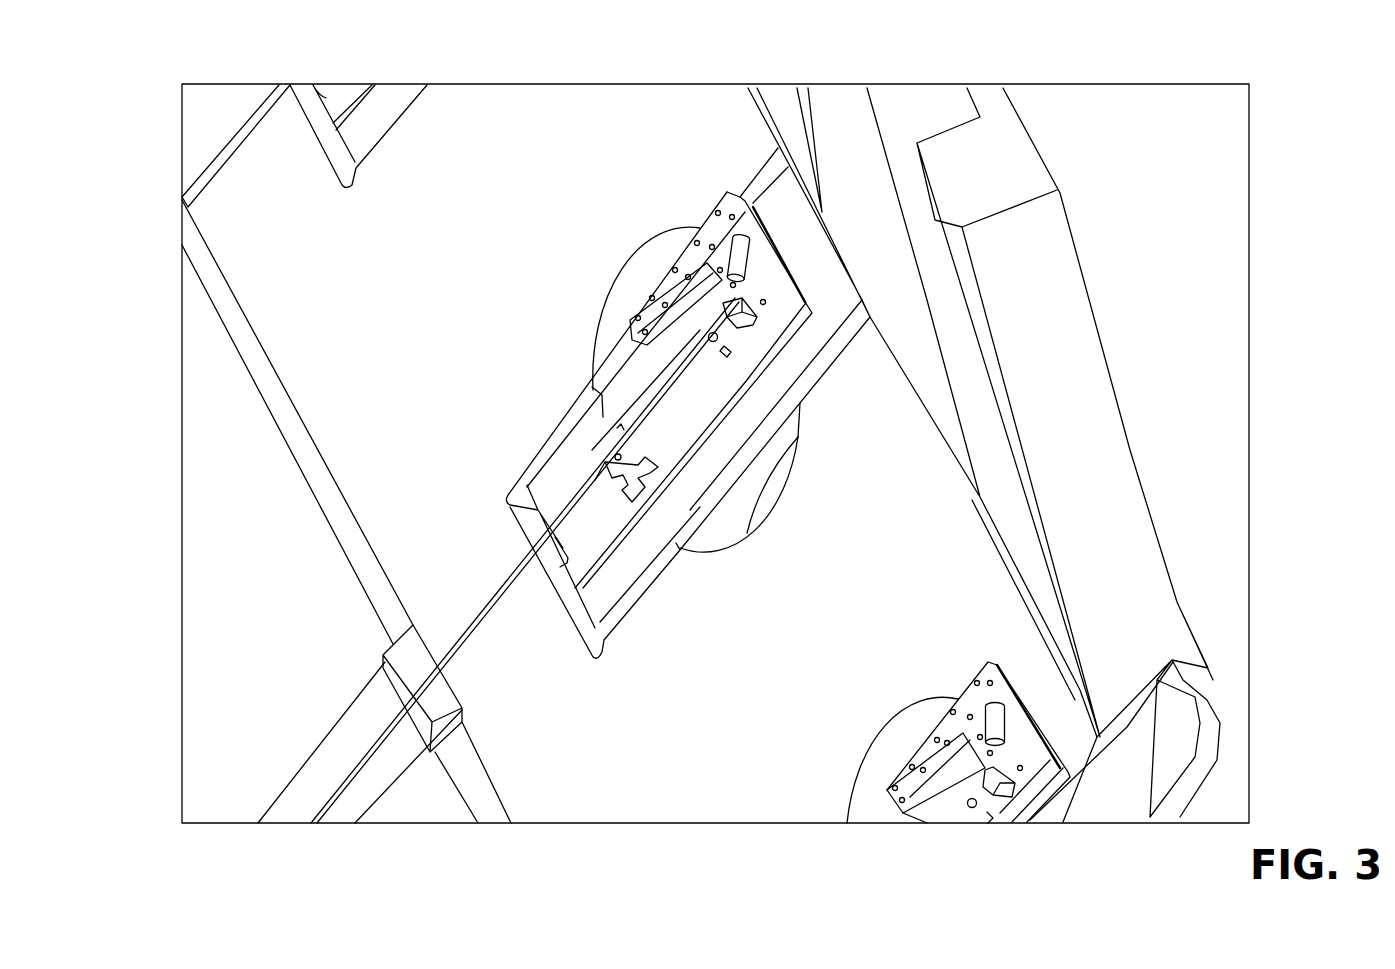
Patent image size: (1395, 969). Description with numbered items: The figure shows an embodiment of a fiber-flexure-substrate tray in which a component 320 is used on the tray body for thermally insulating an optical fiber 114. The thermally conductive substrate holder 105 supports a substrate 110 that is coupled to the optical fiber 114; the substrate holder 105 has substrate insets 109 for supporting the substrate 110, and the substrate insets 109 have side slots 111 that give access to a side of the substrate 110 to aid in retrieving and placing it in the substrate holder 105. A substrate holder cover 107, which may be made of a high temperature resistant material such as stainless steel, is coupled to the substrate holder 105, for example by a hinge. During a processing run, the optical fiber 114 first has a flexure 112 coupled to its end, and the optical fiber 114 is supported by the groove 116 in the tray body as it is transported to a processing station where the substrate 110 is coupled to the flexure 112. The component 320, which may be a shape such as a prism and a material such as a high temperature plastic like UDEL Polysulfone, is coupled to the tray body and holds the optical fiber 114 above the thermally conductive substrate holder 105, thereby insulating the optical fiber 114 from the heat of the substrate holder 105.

The thermally conductive substrate holder 105 is at (809, 705).
The substrate holder cover 107 is at (1096, 330).
The substrate insets 109 is at (560, 430).
The substrate 110 is at (603, 417).
The side slots 111 is at (627, 303).
The flexure 112 is at (700, 362).
The optical fiber 114 is at (358, 768).
The groove 116 is at (297, 798).
The component 320 is at (431, 725).